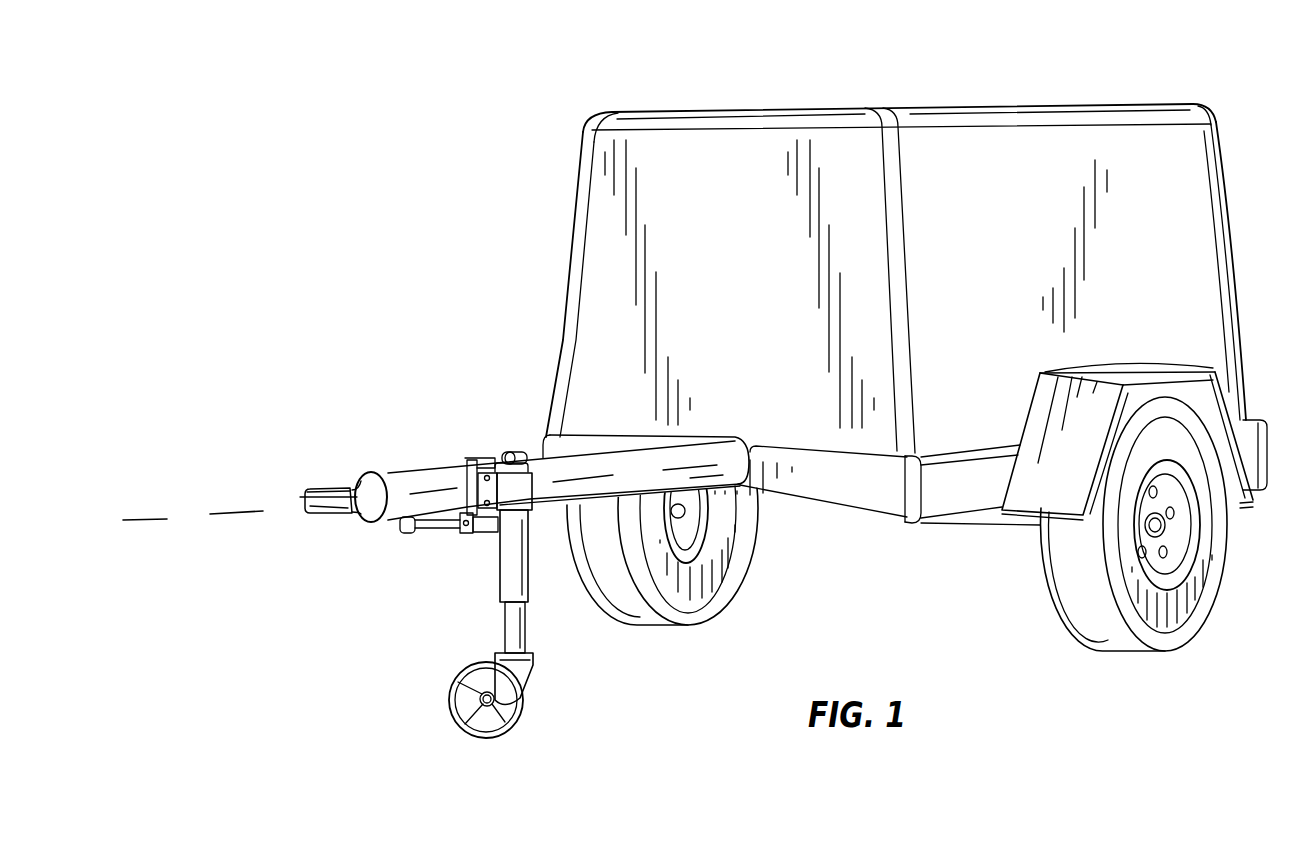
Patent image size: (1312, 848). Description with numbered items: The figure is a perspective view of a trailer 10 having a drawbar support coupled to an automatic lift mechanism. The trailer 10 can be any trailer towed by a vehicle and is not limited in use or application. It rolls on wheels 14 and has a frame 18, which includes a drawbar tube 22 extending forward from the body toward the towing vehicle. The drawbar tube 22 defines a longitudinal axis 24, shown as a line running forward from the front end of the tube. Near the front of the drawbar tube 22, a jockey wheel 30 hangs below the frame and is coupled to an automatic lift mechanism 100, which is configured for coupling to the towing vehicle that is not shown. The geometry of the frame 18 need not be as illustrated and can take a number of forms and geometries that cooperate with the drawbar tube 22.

The trailer 10 is at (296, 93).
The wheels 14 is at (692, 615).
The frame 18 is at (550, 445).
The drawbar tube 22 is at (409, 476).
The longitudinal axis 24 is at (137, 518).
The jockey wheel 30 is at (507, 728).
The automatic lift mechanism 100 is at (429, 403).